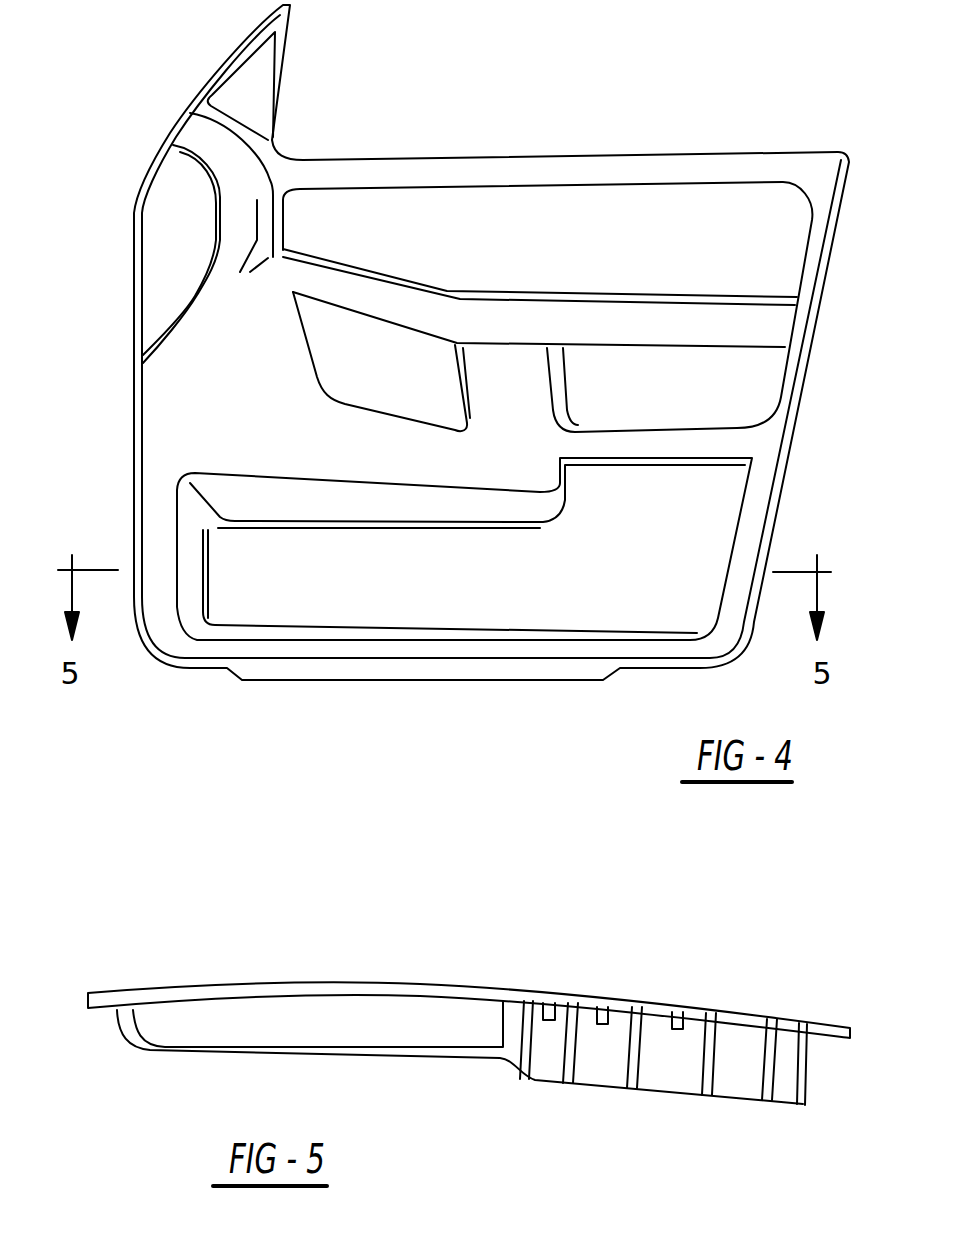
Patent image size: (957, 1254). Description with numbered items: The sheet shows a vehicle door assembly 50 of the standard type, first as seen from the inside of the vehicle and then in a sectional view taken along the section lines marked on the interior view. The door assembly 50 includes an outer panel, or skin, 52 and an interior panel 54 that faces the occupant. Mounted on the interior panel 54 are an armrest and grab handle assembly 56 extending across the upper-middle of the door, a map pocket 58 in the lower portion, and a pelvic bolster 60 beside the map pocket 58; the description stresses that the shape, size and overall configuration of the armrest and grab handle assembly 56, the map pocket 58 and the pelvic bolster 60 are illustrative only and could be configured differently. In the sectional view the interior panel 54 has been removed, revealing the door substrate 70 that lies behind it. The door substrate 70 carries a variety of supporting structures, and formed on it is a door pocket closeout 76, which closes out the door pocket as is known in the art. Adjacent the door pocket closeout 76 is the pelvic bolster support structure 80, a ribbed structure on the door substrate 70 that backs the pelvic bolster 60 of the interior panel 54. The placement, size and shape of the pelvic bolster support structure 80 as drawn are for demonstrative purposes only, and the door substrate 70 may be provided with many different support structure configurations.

In FIG. 4, the door assembly 50 is at (208, 692).
In FIG. 4, the outer panel 52 is at (820, 243).
In FIG. 4, the interior panel 54 is at (750, 441).
In FIG. 4, the armrest and grab handle assembly 56 is at (370, 287).
In FIG. 4, the map pocket 58 is at (340, 580).
In FIG. 4, the pelvic bolster 60 is at (503, 608).
In FIG. 5, the door substrate 70 is at (617, 988).
In FIG. 5, the door pocket closeout 76 is at (197, 1055).
In FIG. 5, the pelvic bolster support structure 80 is at (667, 1047).